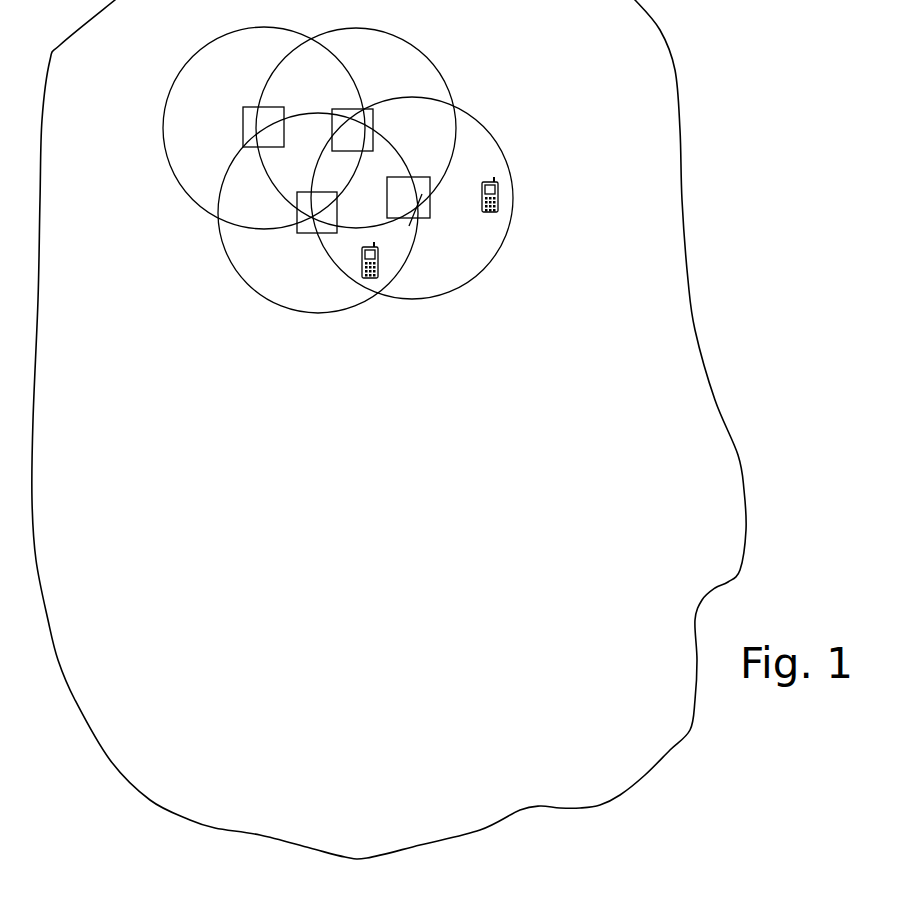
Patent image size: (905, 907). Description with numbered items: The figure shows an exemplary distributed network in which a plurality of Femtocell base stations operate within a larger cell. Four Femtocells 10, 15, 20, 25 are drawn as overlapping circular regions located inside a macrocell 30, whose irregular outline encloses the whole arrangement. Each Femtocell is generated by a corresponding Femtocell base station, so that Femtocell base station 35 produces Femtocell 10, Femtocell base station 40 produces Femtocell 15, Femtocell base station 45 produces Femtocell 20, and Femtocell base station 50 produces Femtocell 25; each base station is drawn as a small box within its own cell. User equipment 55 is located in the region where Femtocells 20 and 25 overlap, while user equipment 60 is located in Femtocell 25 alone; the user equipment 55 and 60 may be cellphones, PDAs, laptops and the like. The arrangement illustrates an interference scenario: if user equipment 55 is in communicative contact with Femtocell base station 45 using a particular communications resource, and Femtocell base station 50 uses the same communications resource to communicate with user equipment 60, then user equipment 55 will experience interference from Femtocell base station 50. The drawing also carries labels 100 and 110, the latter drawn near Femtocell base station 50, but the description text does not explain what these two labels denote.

The Femtocell 10 is at (182, 107).
The Femtocell 15 is at (357, 66).
The Femtocell 20 is at (246, 276).
The Femtocell 25 is at (438, 276).
The macrocell 30 is at (74, 592).
The Femtocell base station 35 is at (248, 141).
The Femtocell base station 40 is at (337, 145).
The Femtocell base station 45 is at (302, 226).
The Femtocell base station 50 is at (393, 209).
The user equipment 55 is at (370, 279).
The user equipment 60 is at (498, 202).
The communication system 100 is at (175, 903).
The serving access point link 110 is at (410, 221).